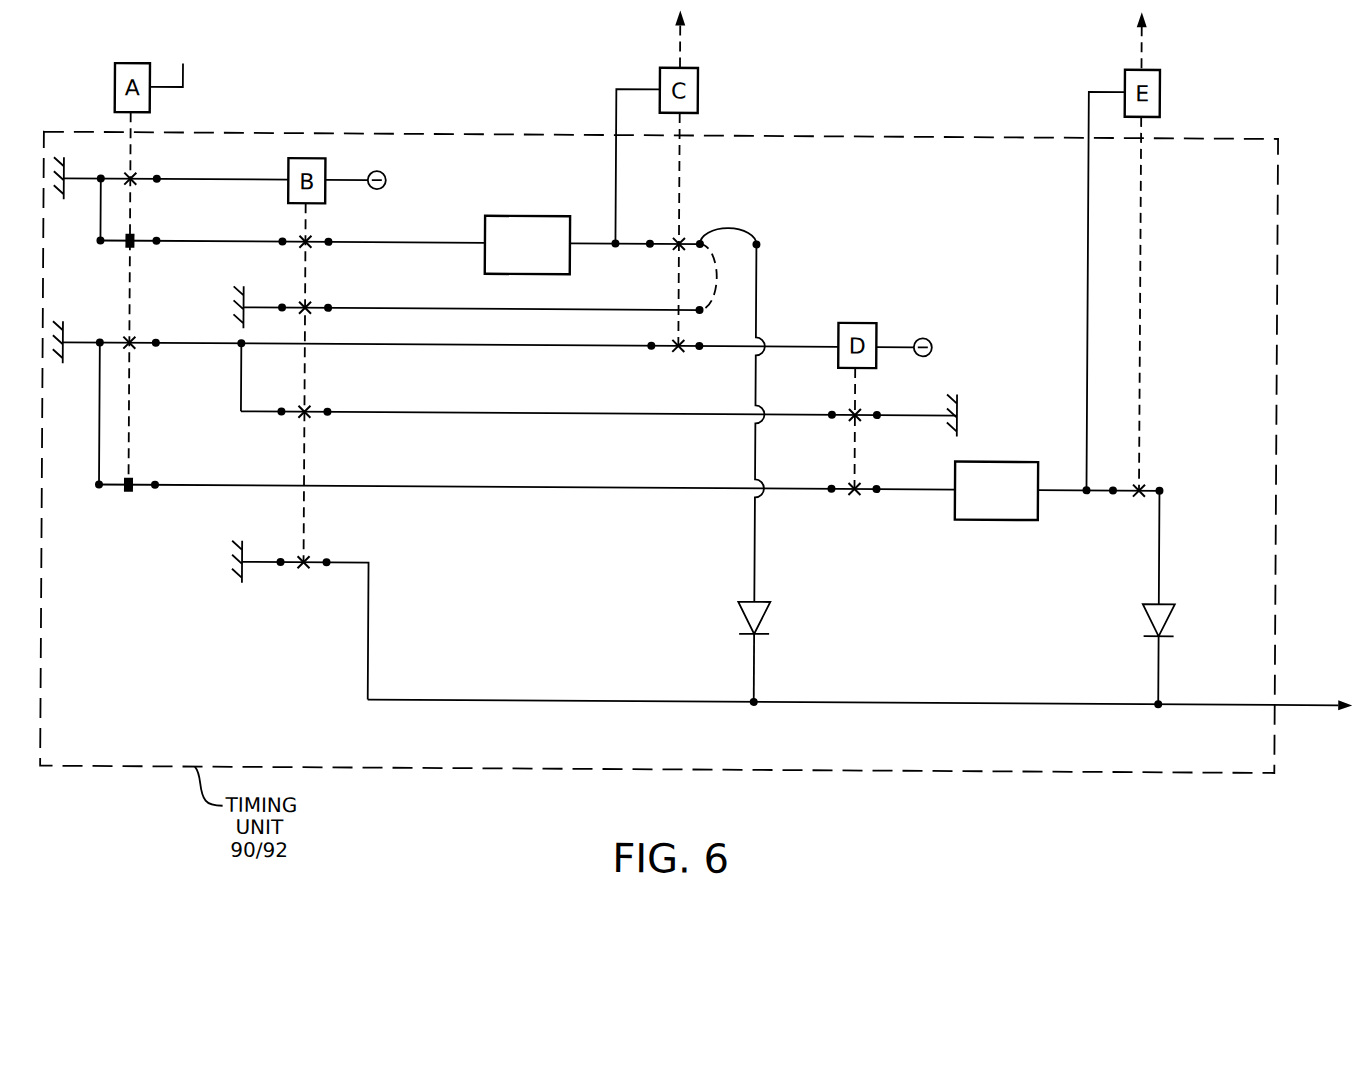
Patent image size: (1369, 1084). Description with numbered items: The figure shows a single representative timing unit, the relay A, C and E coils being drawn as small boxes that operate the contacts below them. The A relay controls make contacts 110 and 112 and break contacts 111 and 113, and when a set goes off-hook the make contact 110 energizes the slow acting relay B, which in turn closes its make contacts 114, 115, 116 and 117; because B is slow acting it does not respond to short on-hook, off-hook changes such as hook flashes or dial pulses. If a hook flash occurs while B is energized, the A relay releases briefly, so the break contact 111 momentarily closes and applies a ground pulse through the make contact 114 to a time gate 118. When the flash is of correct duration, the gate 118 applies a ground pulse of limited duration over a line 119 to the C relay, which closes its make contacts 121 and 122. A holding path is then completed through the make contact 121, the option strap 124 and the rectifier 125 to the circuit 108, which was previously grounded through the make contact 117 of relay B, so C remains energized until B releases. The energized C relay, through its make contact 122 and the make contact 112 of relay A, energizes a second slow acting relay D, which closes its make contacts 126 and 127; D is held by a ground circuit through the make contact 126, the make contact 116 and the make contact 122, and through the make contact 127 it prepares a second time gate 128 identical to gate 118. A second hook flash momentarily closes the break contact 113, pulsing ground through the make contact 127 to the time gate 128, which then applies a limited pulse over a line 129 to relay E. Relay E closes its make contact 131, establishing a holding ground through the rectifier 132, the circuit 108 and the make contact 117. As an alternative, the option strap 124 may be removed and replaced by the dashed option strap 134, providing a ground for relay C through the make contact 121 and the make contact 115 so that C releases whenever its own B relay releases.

The circuit 108 is at (520, 698).
The make contact 110 is at (134, 183).
The break contact 111 is at (134, 245).
The make contact 112 is at (134, 347).
The break contact 113 is at (134, 489).
The make contact 114 is at (309, 245).
The make contact 115 is at (309, 311).
The make contact 116 is at (309, 415).
The make contact 117 is at (309, 565).
The time gate 118 is at (520, 213).
The line 119 is at (614, 183).
The make contact 121 is at (683, 236).
The make contact 122 is at (682, 347).
The option strap 124 is at (738, 226).
The rectifier 125 is at (766, 613).
The make contact 126 is at (861, 406).
The make contact 127 is at (861, 480).
The time gate 128 is at (995, 515).
The line 129 is at (1087, 295).
The make contact 131 is at (1144, 480).
The rectifier 132 is at (1146, 620).
The option strap 134 is at (702, 311).